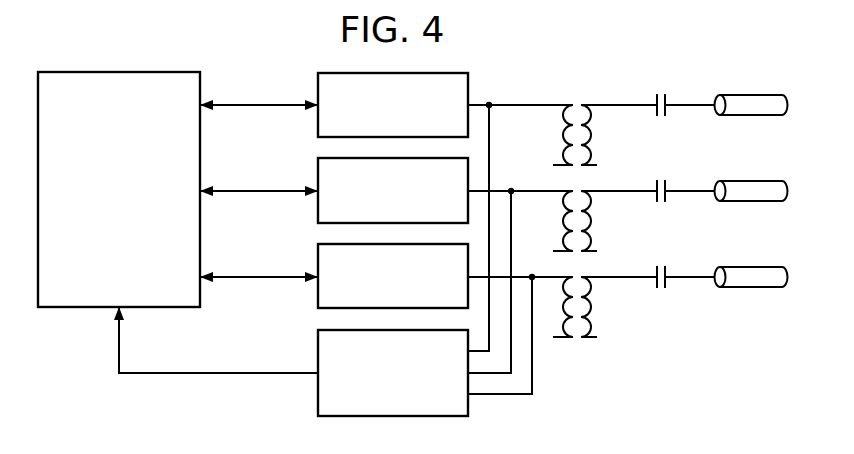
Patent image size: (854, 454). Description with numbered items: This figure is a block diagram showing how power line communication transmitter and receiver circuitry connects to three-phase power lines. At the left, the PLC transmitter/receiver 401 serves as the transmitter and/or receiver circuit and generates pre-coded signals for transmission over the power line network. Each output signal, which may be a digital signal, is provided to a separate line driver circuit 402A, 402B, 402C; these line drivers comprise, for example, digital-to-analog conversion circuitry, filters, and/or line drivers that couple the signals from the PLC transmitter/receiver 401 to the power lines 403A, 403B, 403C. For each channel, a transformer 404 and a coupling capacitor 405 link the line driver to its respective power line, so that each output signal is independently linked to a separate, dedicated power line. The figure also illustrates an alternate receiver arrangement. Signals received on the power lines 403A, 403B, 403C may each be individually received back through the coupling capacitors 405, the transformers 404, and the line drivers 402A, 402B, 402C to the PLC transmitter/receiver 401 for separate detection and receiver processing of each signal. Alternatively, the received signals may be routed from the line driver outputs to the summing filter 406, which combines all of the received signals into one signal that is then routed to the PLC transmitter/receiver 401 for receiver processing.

The PLC transmitter/receiver 401 is at (98, 252).
The line driver circuit 402A is at (317, 88).
The line driver circuit 402B is at (317, 174).
The line driver circuit 402C is at (317, 294).
The power line 403A is at (750, 93).
The power line 403B is at (750, 179).
The power line 403C is at (750, 289).
The transformer 404 is at (579, 98).
The coupling capacitor 405 is at (661, 92).
The summing filter 406 is at (317, 385).